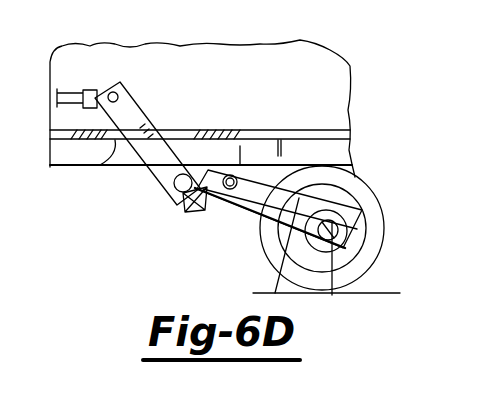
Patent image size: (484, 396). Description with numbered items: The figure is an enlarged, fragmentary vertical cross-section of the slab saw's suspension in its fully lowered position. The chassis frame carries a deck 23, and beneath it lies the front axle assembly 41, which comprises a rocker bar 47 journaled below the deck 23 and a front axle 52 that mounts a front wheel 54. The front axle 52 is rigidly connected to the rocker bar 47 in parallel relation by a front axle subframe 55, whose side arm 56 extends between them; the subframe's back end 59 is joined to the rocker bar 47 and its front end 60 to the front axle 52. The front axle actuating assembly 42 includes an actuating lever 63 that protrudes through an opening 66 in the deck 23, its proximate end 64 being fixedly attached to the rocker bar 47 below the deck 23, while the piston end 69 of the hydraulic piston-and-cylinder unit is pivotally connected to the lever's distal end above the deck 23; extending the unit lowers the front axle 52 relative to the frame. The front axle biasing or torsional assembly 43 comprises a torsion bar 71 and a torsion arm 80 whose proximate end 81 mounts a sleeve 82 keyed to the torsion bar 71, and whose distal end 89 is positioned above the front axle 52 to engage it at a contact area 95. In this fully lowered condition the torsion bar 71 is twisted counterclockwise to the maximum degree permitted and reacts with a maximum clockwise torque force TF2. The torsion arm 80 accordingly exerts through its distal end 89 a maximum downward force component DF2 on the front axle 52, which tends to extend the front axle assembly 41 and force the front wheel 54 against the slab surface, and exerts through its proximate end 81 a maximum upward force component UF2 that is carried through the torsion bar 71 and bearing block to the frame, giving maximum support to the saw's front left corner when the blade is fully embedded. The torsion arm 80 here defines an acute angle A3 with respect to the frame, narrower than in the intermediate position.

The deck 23 is at (263, 129).
The piston end 69 is at (93, 91).
The actuating lever 63 is at (146, 114).
The front axle actuating assembly 42 is at (142, 79).
The opening 66 is at (114, 166).
The back end 59 is at (170, 197).
The rocker bar 47 is at (188, 210).
The front axle assembly 41 is at (190, 250).
The proximate end 64 is at (205, 209).
The front axle biasing or torsional assembly 43 is at (300, 172).
The proximate end 81 is at (209, 176).
The sleeve 82 is at (238, 176).
The torsion bar 71 is at (243, 130).
The acute angle A3 is at (288, 166).
The front end 60 is at (384, 251).
The distal end 89 is at (374, 219).
The side arm 56 is at (277, 243).
The front axle subframe 55 is at (338, 243).
The contact area 95 is at (323, 246).
The front axle 52 is at (329, 273).
The torsion arm 80 is at (279, 259).
The front wheel 54 is at (262, 278).
The upward force component UF2 is at (230, 192).
The downward force component DF2 is at (331, 222).
The clockwise torque force TF2 is at (357, 207).